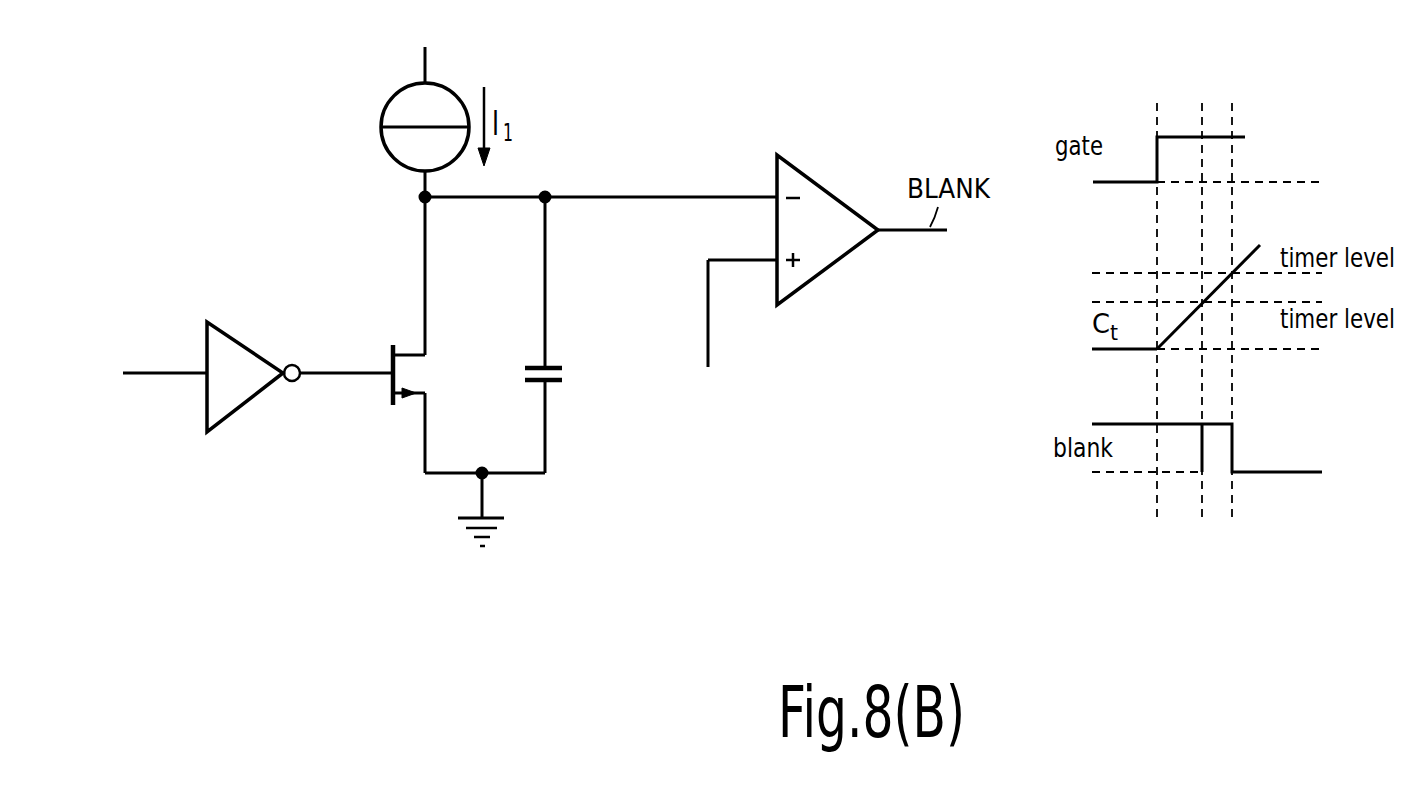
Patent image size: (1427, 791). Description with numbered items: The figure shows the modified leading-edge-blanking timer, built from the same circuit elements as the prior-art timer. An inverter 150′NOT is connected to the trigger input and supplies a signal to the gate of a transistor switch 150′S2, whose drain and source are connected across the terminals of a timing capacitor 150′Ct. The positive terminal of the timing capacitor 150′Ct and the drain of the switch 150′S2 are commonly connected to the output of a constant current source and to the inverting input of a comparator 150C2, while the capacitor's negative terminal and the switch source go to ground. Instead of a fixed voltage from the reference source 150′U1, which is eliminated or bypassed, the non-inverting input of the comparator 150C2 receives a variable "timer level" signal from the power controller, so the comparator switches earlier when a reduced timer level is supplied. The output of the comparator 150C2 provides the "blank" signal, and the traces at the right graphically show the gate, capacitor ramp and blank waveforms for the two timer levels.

The inverter 150′NOT is at (246, 357).
The transistor switch 150′S2 is at (388, 384).
The timing capacitor 150′Ct is at (588, 352).
The comparator 150C2 is at (827, 205).
The voltage reference source 150′U1 is at (705, 343).